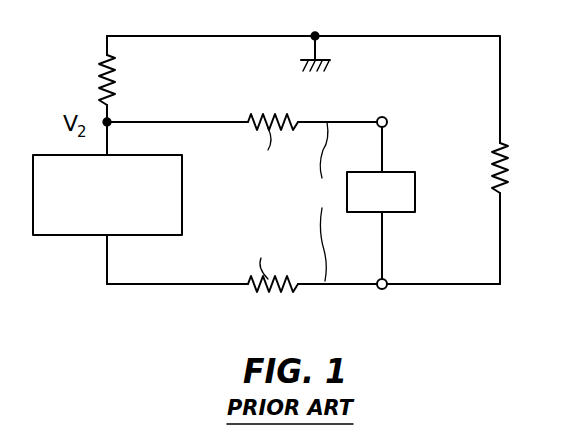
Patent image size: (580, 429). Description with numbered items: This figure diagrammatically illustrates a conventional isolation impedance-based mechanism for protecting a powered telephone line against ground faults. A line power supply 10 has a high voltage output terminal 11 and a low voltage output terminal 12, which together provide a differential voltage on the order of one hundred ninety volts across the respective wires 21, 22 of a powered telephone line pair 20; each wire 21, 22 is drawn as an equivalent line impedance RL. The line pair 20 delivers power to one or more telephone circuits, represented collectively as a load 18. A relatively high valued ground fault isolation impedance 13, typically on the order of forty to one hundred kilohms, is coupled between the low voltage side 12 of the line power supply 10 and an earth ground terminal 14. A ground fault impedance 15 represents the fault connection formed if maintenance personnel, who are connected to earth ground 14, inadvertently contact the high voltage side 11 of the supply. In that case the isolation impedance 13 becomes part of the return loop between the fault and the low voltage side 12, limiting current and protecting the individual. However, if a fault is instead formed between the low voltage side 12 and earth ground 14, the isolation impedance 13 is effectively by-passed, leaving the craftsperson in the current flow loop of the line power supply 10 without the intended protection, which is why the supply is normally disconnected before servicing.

The line power supply 10 is at (182, 197).
The high voltage output terminal 11 is at (125, 285).
The low voltage output terminal 12 is at (195, 122).
The ground fault isolation impedance 13 is at (116, 80).
The earth ground terminal 14 is at (326, 62).
The ground fault impedance 15 is at (506, 188).
The load 18 is at (415, 205).
The powered telephone line pair 20 is at (326, 201).
The wire 21 is at (268, 290).
The wire 22 is at (312, 122).